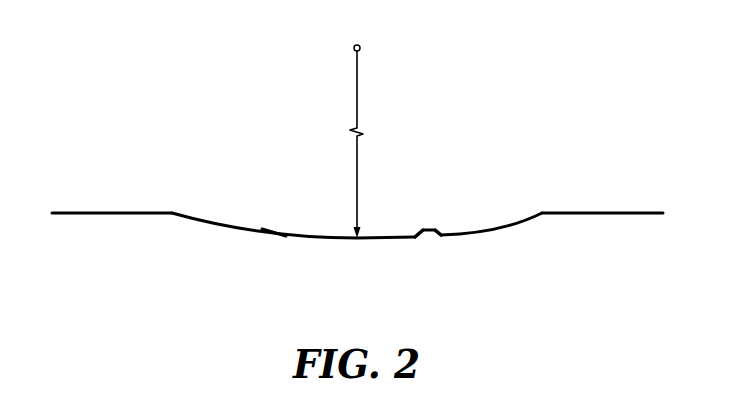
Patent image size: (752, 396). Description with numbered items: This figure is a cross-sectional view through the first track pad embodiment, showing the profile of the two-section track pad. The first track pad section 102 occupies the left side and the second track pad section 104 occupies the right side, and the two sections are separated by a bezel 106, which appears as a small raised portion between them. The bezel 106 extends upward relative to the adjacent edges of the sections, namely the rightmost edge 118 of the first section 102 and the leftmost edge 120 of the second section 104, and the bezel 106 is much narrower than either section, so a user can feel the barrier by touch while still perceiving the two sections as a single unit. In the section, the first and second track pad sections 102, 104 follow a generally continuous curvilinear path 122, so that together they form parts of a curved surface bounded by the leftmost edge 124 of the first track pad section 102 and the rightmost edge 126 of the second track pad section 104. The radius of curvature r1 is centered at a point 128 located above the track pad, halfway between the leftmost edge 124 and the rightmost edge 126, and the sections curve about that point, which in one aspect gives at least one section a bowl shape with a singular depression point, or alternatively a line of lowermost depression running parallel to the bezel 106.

The first track pad section 102 is at (273, 244).
The second track pad section 104 is at (498, 245).
The bezel 106 is at (427, 231).
The rightmost edge of the first section 118 is at (415, 233).
The leftmost edge of the second section 120 is at (442, 233).
The curvilinear path 122 is at (272, 224).
The leftmost edge of the first track pad section 124 is at (172, 215).
The rightmost edge of the second track pad section 126 is at (543, 216).
The point 128 is at (361, 46).
The radius of curvature r1 is at (355, 171).